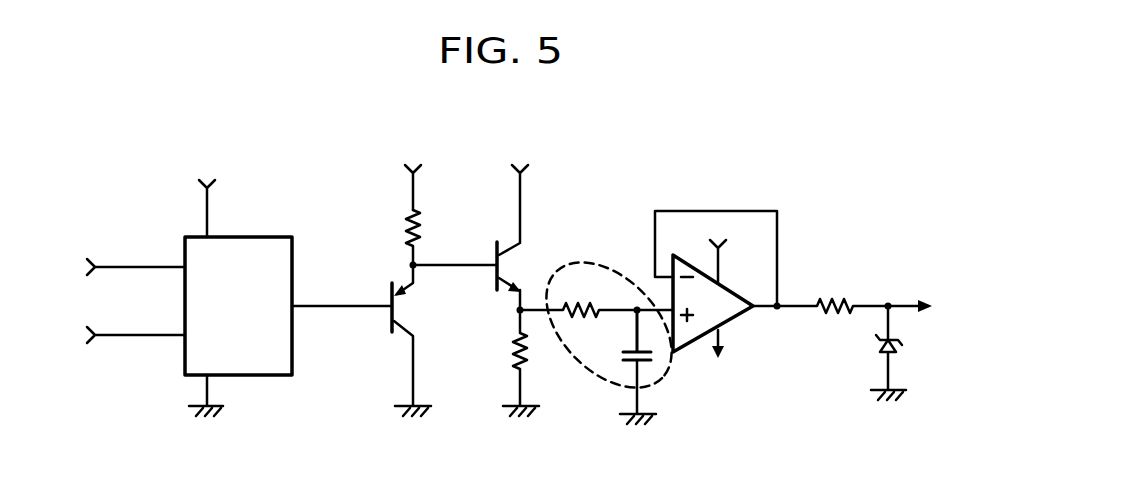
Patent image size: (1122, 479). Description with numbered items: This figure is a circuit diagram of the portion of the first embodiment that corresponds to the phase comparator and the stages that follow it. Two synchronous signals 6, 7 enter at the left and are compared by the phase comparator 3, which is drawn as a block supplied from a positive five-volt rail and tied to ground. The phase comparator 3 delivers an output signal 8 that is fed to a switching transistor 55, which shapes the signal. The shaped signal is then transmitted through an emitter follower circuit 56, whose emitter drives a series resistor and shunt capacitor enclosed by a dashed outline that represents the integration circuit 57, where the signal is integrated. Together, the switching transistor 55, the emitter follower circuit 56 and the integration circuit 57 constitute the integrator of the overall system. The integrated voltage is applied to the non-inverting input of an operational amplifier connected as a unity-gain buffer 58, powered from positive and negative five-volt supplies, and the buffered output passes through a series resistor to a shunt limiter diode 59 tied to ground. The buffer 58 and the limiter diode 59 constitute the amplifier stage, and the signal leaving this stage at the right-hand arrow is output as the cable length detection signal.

The phase comparator 3 is at (239, 237).
The synchronous signal 6 is at (142, 267).
The synchronous signal 7 is at (130, 335).
The output signal 8 is at (320, 305).
The switching transistor 55 is at (390, 321).
The emitter follower circuit 56 is at (492, 280).
The integration circuit 57 is at (581, 366).
The buffer 58 is at (727, 284).
The limiter diode 59 is at (876, 345).